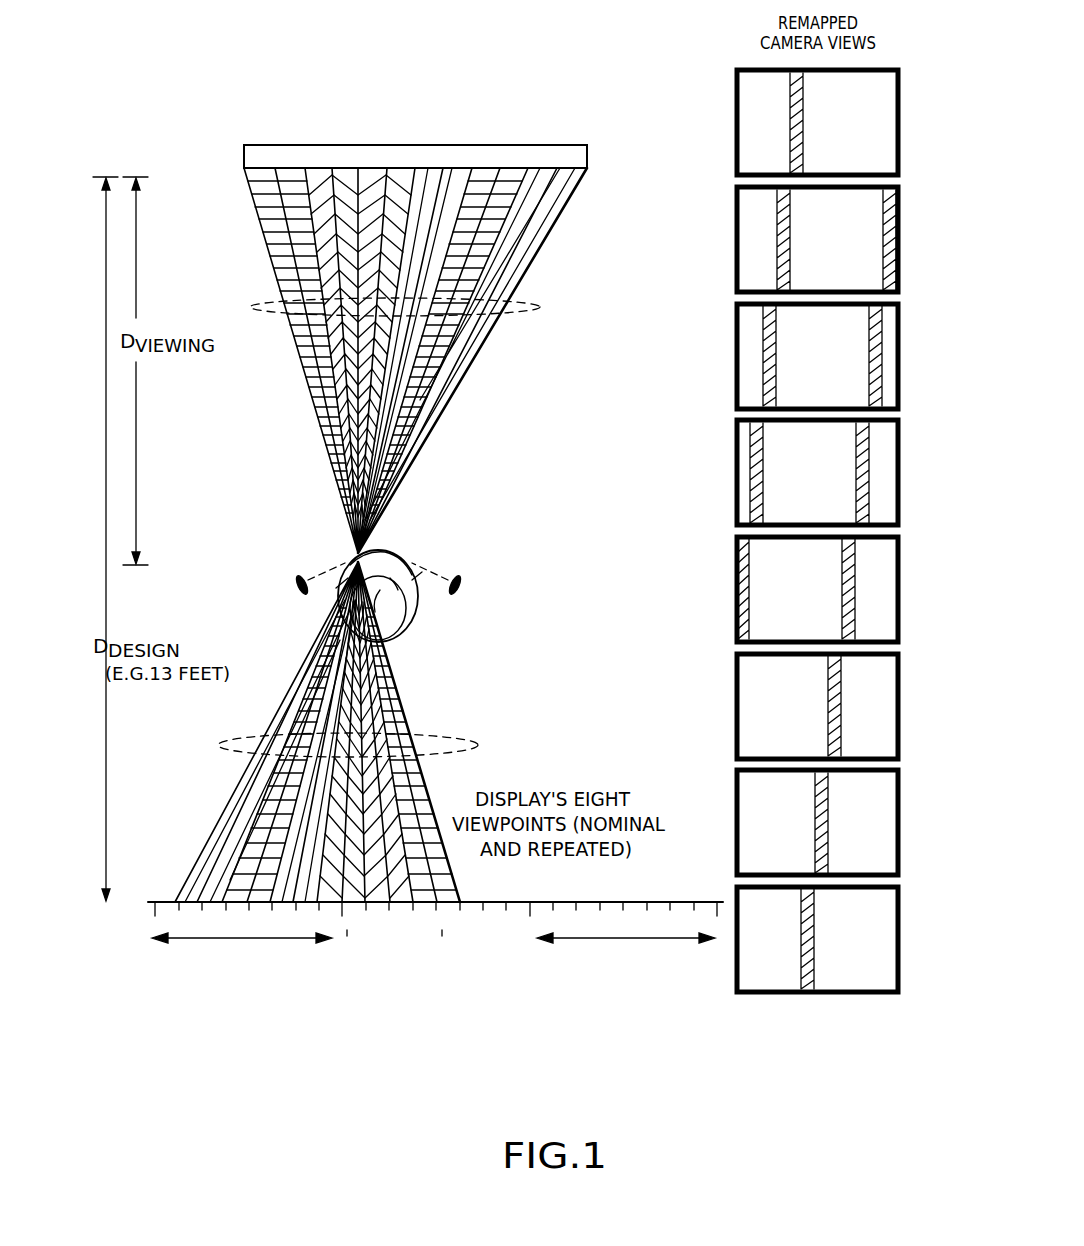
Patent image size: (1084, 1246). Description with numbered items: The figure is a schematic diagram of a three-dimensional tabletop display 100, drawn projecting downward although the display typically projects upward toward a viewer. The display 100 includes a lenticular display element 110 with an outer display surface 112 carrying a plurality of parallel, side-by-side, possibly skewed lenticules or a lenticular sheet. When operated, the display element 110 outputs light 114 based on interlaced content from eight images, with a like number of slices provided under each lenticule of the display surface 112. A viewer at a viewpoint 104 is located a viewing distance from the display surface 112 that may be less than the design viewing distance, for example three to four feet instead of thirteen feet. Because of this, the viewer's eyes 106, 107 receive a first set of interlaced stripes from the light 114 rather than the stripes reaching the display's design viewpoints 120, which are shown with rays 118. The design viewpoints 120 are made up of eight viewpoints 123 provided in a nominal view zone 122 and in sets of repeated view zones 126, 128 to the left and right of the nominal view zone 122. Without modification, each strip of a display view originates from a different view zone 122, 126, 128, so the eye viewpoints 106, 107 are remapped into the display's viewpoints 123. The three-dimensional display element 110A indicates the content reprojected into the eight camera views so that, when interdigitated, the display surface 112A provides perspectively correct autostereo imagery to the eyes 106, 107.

The 3D tabletop display 100 is at (128, 158).
The lenticular display element 110 is at (314, 131).
The display surface 112 is at (235, 172).
The light 114 is at (248, 312).
The viewpoint 104 is at (622, 555).
The eye 106 is at (258, 638).
The eye 107 is at (506, 634).
The rays 118 is at (520, 735).
The design viewpoints 120 is at (148, 910).
The nominal view zone 122 is at (397, 940).
The viewpoints 123 is at (398, 940).
The repeated view zones 126 is at (185, 992).
The repeated view zones 128 is at (678, 986).
The 3D display element 110A is at (725, 249).
The display surface 112A is at (725, 187).